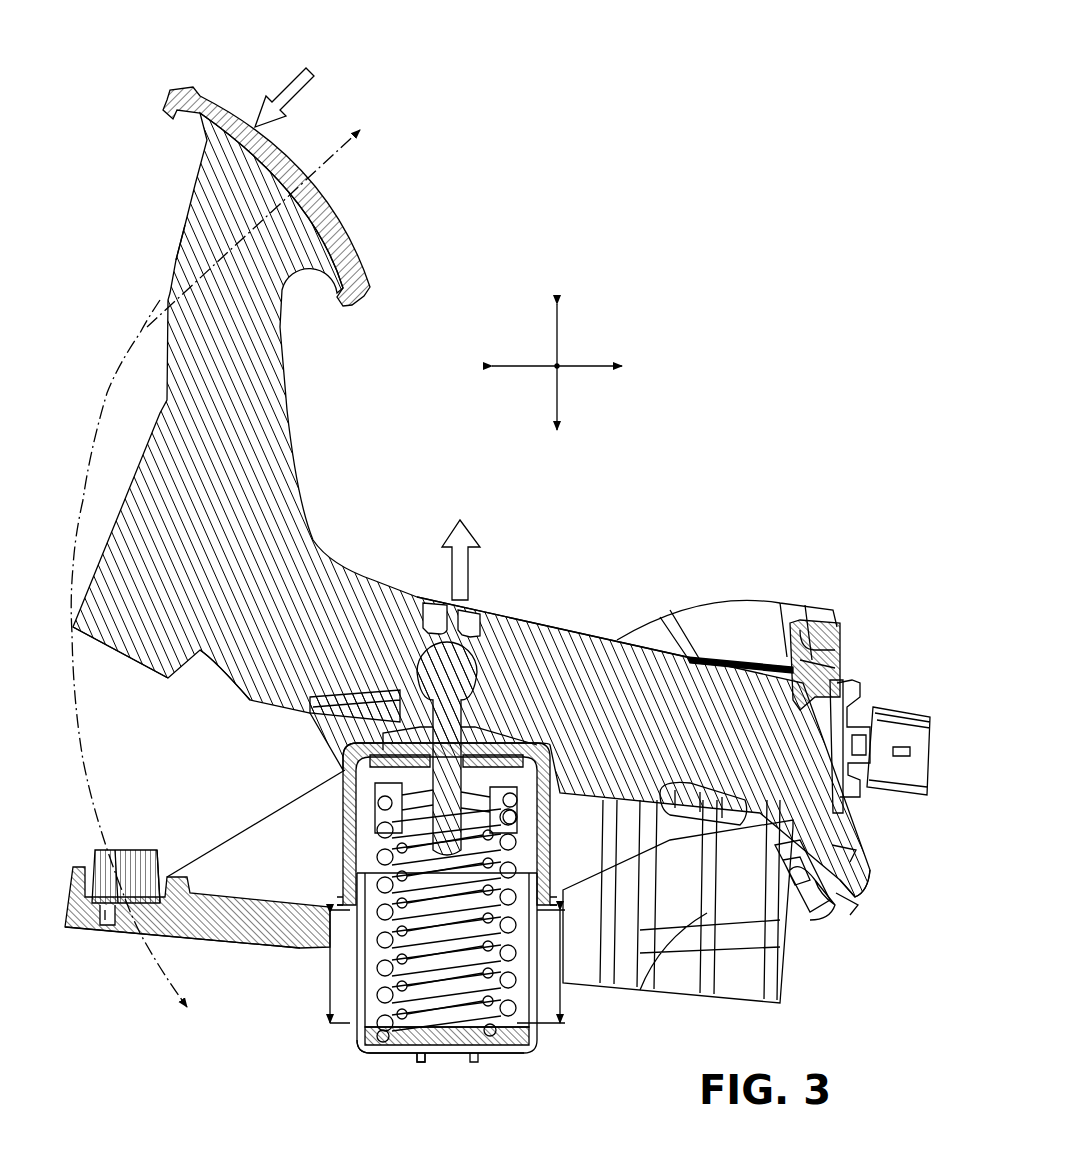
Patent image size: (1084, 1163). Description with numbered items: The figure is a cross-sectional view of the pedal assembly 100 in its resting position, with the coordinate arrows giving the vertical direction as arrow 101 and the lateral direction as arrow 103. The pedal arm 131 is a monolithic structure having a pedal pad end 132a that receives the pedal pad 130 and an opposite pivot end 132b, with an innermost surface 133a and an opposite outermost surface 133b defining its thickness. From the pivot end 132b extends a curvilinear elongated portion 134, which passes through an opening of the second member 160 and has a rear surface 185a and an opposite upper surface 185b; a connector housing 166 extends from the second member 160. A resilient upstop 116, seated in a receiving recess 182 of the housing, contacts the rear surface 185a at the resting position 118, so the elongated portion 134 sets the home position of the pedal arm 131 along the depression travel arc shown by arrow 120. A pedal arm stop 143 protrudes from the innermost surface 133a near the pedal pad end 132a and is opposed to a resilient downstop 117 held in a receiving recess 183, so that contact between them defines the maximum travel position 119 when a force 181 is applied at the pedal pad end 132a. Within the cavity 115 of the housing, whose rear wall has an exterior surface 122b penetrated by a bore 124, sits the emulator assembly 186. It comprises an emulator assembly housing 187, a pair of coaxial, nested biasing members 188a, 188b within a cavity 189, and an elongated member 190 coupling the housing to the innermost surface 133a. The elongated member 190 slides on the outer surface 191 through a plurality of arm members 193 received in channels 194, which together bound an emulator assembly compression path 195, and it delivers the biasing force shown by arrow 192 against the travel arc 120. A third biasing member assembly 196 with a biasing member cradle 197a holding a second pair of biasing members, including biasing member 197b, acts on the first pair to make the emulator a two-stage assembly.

The pedal assembly 100 is at (780, 518).
The arrow 101 is at (590, 368).
The arrow 103 is at (560, 340).
The cavity 115 is at (285, 888).
The upstop 116 is at (837, 900).
The downstop 117 is at (118, 883).
The resting position 118 is at (307, 167).
The maximum travel position 119 is at (93, 845).
The depression travel arc 120 is at (103, 430).
The exterior surface 122b is at (710, 993).
The bore 124 is at (317, 942).
The pedal pad 130 is at (190, 75).
The pedal arm 131 is at (327, 457).
The pedal pad end 132a is at (183, 187).
The pivot end 132b is at (705, 665).
The innermost surface 133a is at (247, 695).
The outermost surface 133b is at (552, 635).
The elongated portion 134 is at (867, 870).
The pedal arm stop 143 is at (147, 667).
The second member 160 is at (845, 615).
The connector housing 166 is at (885, 700).
The force 181 is at (285, 72).
The receiving recess 182 is at (827, 880).
The receiving recess 183 is at (153, 893).
The rear surface 185a is at (853, 900).
The upper surface 185b is at (860, 847).
The emulator assembly 186 is at (560, 1053).
The emulator assembly housing 187 is at (503, 1053).
The biasing member 188a is at (530, 983).
The biasing member 188b is at (505, 1020).
The cavity 189 is at (372, 847).
The elongated member 190 is at (407, 743).
The outer surface 191 is at (520, 913).
The arrow 192 is at (470, 576).
The arm members 193 is at (347, 770).
The channels 194 is at (327, 990).
The emulator assembly compression path 195 is at (333, 1007).
The third biasing member assembly 196 is at (517, 822).
The biasing member cradle 197a is at (412, 800).
The biasing member 197b is at (370, 773).